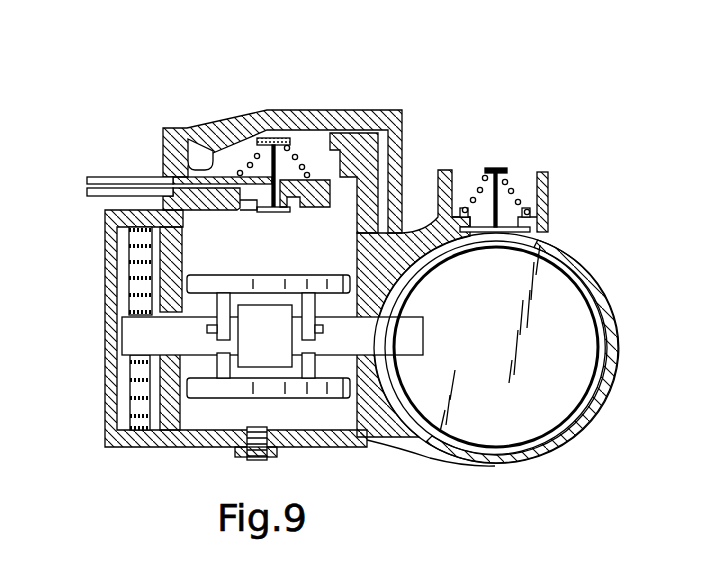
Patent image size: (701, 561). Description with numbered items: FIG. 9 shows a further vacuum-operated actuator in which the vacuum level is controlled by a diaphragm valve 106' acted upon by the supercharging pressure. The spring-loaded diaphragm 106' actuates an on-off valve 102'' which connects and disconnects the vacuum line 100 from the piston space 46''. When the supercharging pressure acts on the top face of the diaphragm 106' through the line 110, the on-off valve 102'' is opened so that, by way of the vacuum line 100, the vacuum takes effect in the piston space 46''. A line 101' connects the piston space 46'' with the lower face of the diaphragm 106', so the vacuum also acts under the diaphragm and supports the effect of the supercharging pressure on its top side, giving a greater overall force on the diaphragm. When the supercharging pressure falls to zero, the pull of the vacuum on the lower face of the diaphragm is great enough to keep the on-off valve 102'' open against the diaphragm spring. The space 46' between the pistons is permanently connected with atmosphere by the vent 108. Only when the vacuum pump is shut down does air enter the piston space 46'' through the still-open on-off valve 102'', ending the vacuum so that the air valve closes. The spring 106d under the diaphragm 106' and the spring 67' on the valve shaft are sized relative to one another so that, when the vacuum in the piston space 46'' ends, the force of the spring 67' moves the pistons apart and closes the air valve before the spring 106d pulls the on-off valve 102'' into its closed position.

The vacuum line 100 is at (85, 185).
The line 101' is at (308, 223).
The on-off valve 102'' is at (274, 146).
The diaphragm valve 106' is at (201, 126).
The spring 106d is at (300, 163).
The vent 108 is at (160, 289).
The line 110 is at (380, 183).
The space between the pistons 46' is at (228, 373).
The piston space 46'' is at (268, 267).
The spring 67' is at (192, 391).